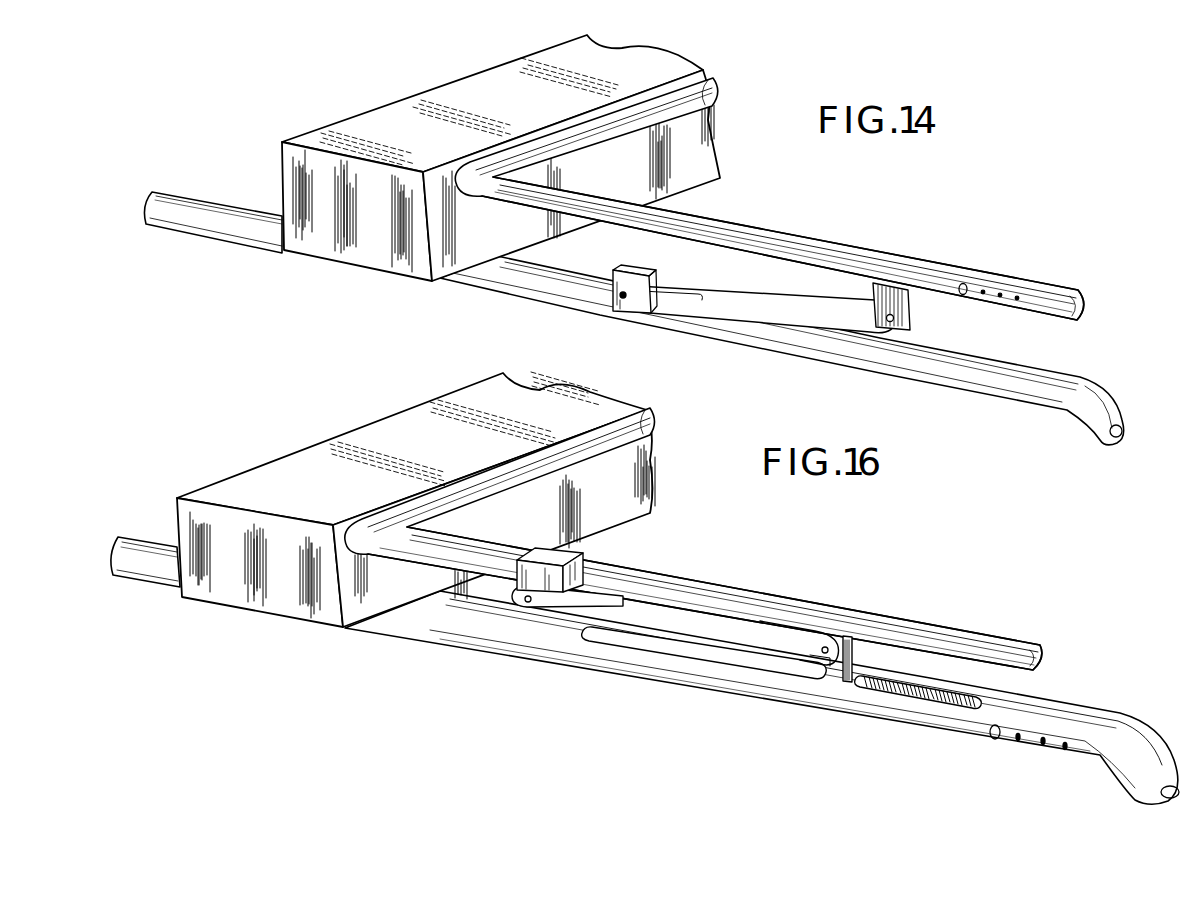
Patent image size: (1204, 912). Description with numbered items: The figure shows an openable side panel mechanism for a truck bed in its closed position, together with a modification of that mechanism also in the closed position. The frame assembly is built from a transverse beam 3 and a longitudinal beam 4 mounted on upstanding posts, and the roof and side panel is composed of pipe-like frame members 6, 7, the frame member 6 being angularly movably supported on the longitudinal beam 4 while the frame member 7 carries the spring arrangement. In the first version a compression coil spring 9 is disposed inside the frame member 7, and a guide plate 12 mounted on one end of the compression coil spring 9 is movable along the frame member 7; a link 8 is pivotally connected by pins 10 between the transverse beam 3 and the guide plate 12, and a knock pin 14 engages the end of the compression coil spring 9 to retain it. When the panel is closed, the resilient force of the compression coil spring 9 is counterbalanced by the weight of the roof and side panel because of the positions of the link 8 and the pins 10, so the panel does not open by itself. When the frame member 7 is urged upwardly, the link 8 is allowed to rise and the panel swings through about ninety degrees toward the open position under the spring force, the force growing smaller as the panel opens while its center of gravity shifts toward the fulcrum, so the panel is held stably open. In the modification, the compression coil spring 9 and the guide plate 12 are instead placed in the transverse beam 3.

In FIG. 14, the transverse beam 3 is at (1068, 414).
In FIG. 16, the transverse beam 3 is at (1062, 747).
In FIG. 14, the longitudinal beam 4 is at (388, 114).
In FIG. 16, the longitudinal beam 4 is at (382, 432).
In FIG. 14, the frame member 6 is at (708, 130).
In FIG. 16, the frame member 6 is at (651, 468).
In FIG. 14, the frame member 7 is at (820, 237).
In FIG. 16, the frame member 7 is at (900, 630).
In FIG. 14, the link 8 is at (782, 318).
In FIG. 16, the link 8 is at (560, 609).
In FIG. 16, the compression coil spring 9 is at (938, 706).
In FIG. 14, the pin 10 is at (624, 306).
In FIG. 16, the pin 10 is at (527, 606).
In FIG. 14, the guide plate 12 is at (938, 290).
In FIG. 16, the guide plate 12 is at (846, 636).
In FIG. 14, the knock pin 14 is at (965, 297).
In FIG. 16, the knock pin 14 is at (992, 738).